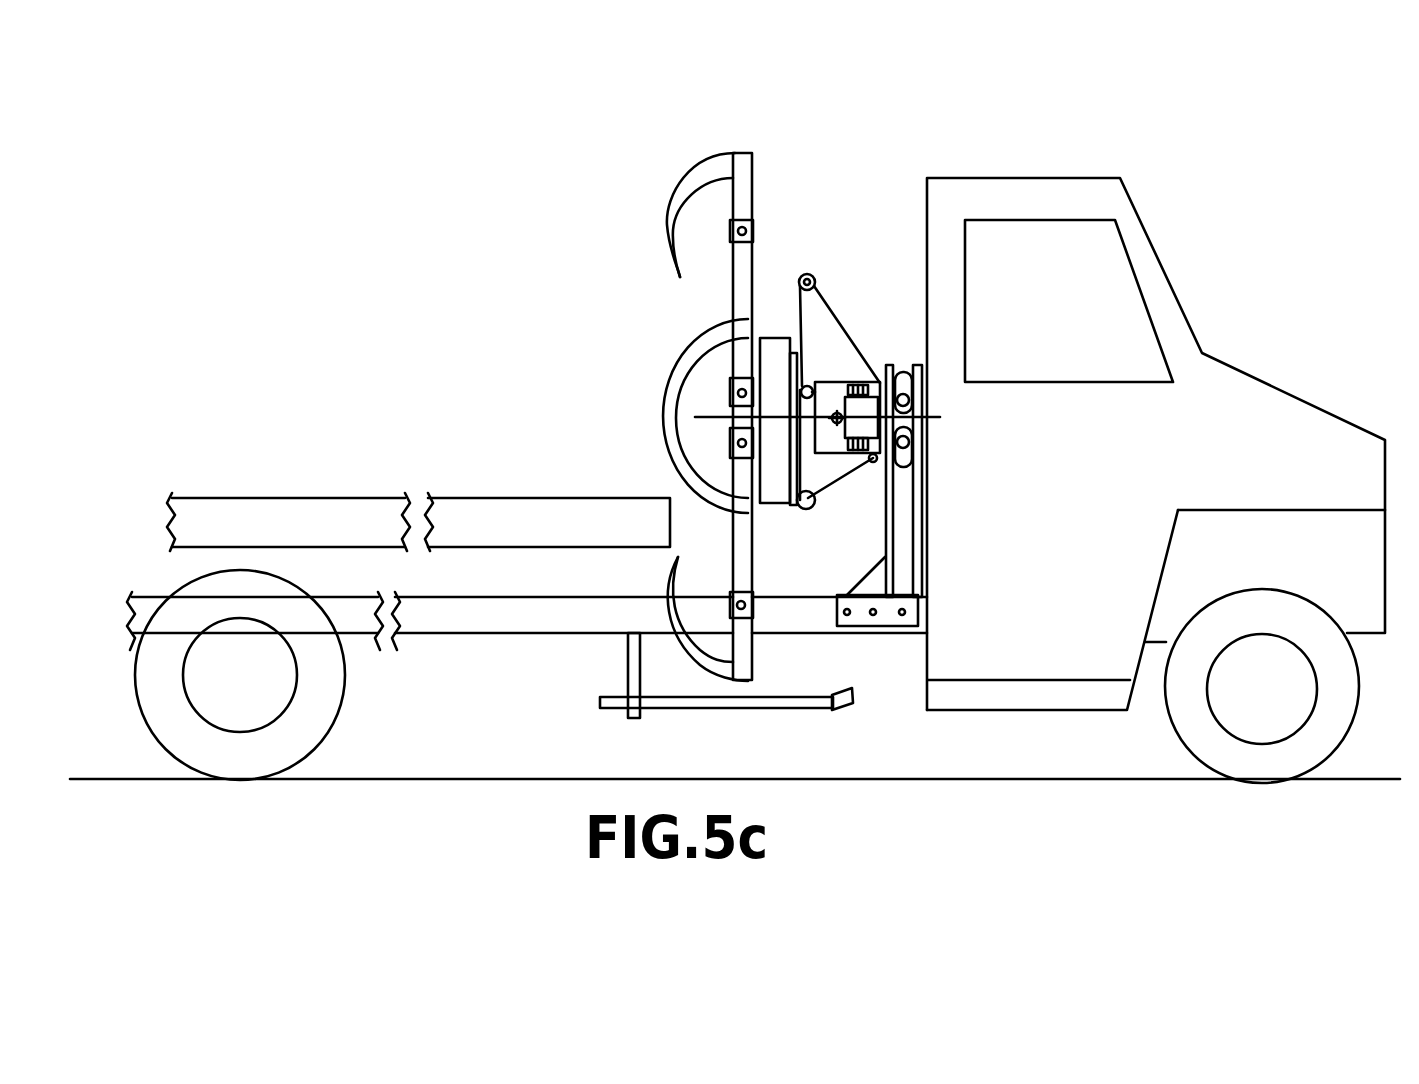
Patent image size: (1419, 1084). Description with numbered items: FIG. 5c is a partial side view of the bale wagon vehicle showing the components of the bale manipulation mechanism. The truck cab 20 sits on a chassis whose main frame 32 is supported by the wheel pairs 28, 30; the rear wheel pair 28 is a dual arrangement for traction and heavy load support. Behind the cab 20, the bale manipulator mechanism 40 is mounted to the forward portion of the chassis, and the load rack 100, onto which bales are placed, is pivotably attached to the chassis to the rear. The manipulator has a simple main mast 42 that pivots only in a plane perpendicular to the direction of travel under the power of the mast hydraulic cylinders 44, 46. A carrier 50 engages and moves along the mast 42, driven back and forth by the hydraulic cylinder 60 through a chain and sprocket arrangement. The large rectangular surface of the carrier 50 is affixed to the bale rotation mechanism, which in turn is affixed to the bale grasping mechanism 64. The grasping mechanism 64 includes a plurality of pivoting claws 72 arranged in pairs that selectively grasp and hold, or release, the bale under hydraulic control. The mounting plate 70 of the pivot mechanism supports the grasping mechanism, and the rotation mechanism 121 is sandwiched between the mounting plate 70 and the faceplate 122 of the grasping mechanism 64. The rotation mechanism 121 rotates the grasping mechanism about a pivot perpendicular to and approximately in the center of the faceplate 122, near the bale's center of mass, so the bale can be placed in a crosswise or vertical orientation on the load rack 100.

The truck cab 20 is at (1220, 380).
The wheel pair 28 is at (235, 758).
The wheel pair 30 is at (1248, 762).
The main frame 32 is at (477, 620).
The bale manipulator mechanism 40 is at (614, 293).
The main mast 42 is at (829, 455).
The mast hydraulic cylinder 44 is at (905, 372).
The mast hydraulic cylinder 46 is at (905, 455).
The carrier 50 is at (840, 372).
The hydraulic cylinder 60 is at (857, 383).
The bale grasping mechanism 64 is at (767, 244).
The mounting plate 70 is at (805, 510).
The pivoting claws 72 is at (699, 177).
The load rack 100 is at (266, 494).
The rotation mechanism 121 is at (768, 507).
The faceplate 122 is at (753, 283).